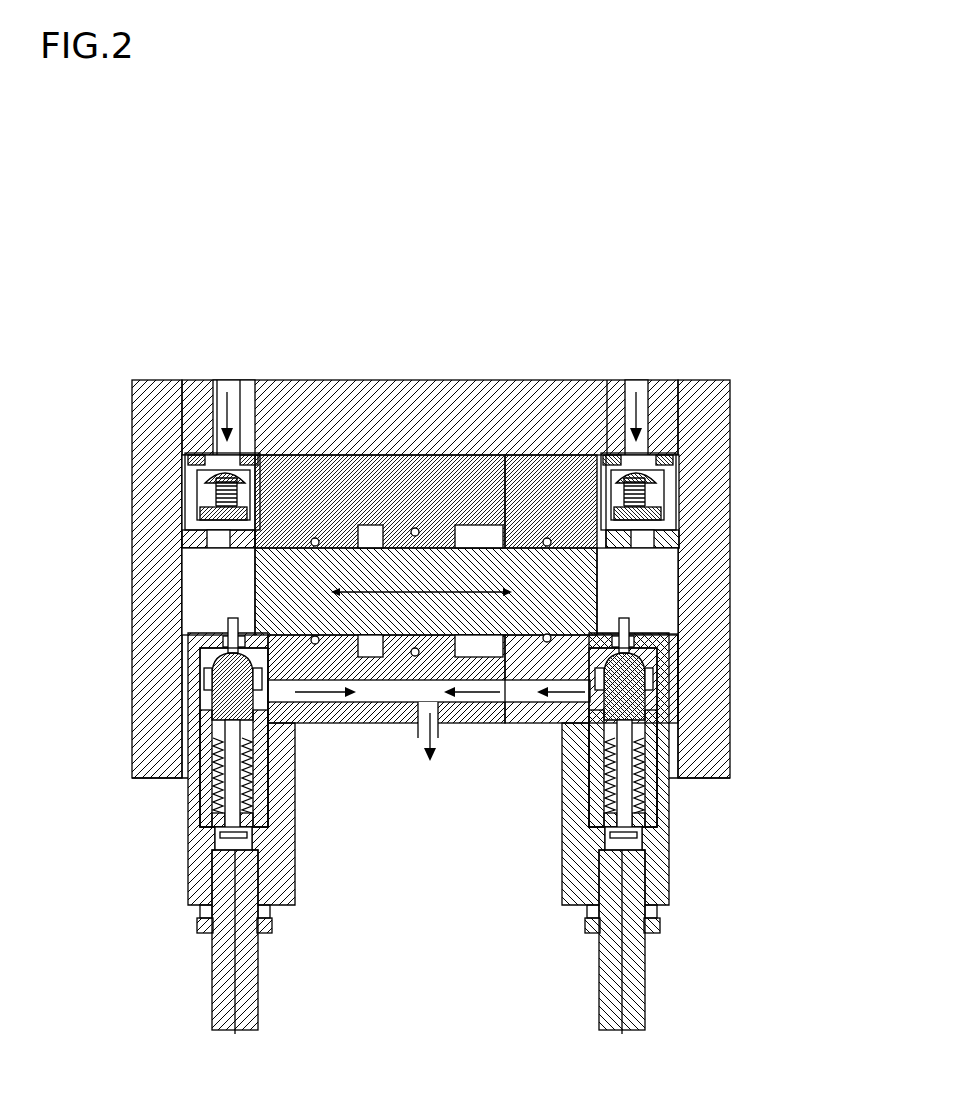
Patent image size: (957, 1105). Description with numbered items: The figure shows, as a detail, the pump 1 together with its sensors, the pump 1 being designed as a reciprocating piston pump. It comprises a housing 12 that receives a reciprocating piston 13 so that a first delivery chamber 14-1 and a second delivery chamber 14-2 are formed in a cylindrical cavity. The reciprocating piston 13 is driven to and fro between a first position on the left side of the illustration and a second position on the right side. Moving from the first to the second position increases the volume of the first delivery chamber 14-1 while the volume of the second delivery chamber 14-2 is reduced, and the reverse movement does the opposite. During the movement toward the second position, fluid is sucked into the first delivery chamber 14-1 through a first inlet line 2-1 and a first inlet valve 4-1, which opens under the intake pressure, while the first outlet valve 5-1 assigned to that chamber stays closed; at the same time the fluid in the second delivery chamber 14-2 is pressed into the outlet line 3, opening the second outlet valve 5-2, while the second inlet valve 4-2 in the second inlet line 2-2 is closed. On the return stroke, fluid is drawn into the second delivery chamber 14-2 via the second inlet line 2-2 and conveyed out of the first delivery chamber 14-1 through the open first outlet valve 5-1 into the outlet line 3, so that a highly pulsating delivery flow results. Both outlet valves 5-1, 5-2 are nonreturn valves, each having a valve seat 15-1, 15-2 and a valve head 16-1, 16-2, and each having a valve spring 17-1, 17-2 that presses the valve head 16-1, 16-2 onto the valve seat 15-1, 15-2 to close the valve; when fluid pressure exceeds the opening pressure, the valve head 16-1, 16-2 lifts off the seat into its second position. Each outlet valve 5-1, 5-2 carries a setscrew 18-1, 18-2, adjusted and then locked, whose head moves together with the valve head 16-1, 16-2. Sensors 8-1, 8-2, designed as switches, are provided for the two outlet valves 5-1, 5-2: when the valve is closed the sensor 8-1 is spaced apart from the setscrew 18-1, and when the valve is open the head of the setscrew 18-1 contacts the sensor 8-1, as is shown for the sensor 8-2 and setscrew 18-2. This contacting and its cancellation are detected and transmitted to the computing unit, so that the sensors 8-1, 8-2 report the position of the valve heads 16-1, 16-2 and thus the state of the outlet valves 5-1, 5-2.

The pump 1 is at (398, 305).
The first inlet line 2-1 is at (232, 378).
The second inlet line 2-2 is at (638, 378).
The outlet line 3 is at (522, 705).
The first inlet valve 4-1 is at (210, 455).
The second inlet valve 4-2 is at (662, 455).
The first outlet valve 5-1 is at (262, 770).
The second outlet valve 5-2 is at (562, 767).
The sensor 8-1 is at (242, 943).
The sensor 8-2 is at (637, 950).
The housing 12 is at (430, 470).
The reciprocating piston 13 is at (385, 490).
The first delivery chamber 14-1 is at (195, 582).
The second delivery chamber 14-2 is at (662, 565).
The valve seat 15-1 is at (205, 655).
The valve seat 15-2 is at (663, 655).
The valve head 16-1 is at (200, 672).
The valve head 16-2 is at (663, 673).
The valve spring 17-1 is at (270, 808).
The valve spring 17-2 is at (593, 807).
The setscrew 18-1 is at (222, 832).
The setscrew 18-2 is at (633, 843).